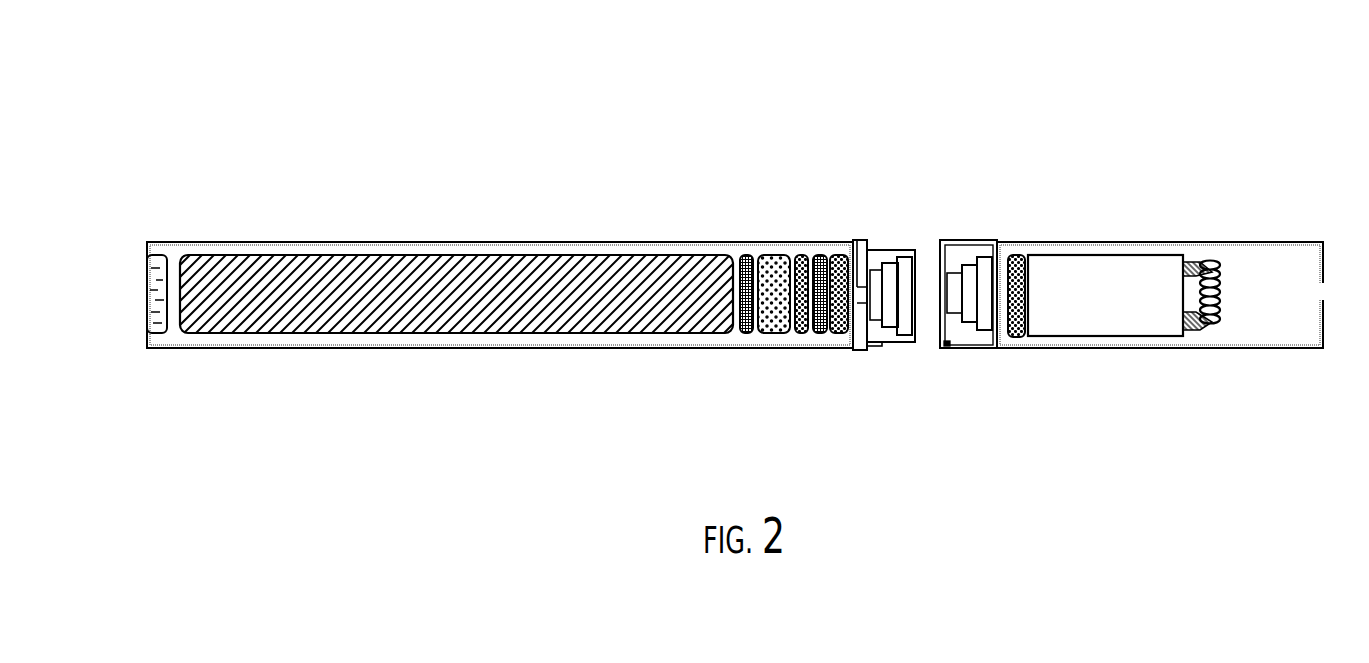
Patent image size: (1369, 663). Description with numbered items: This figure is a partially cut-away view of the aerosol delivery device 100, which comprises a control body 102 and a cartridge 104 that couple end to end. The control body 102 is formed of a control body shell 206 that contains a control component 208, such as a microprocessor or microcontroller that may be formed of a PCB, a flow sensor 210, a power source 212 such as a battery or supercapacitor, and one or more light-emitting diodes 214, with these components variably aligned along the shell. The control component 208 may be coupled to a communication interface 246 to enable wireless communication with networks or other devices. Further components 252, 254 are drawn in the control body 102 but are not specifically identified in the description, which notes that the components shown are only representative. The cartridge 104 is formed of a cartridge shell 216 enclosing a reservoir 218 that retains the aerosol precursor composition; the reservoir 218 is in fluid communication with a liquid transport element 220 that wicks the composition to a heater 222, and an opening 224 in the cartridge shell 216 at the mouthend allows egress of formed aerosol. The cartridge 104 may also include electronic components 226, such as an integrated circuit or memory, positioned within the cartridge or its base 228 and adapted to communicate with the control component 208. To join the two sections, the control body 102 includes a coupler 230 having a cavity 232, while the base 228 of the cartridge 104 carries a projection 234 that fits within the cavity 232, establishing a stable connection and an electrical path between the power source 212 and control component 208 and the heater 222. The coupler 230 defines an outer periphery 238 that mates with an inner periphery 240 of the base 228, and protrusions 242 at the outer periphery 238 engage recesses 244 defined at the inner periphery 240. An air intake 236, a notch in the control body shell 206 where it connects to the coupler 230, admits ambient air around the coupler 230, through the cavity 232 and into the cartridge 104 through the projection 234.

The aerosol delivery device 100 is at (630, 80).
The control body 102 is at (217, 199).
The cartridge 104 is at (1145, 204).
The control body shell 206 is at (500, 321).
The control component 208 is at (754, 341).
The flow sensor 210 is at (858, 355).
The power source 212 is at (463, 327).
The light-emitting diodes 214 is at (178, 328).
The cartridge shell 216 is at (1160, 336).
The reservoir 218 is at (1105, 320).
The liquid transport element 220 is at (1228, 329).
The heater 222 is at (1250, 325).
The opening 224 is at (1282, 246).
The electronic components 226 is at (1037, 320).
The base 228 is at (1022, 331).
The coupler 230 is at (907, 325).
The cavity 232 is at (873, 247).
The projection 234 is at (999, 263).
The air intake 236 is at (838, 268).
The outer periphery 238 is at (913, 262).
The inner periphery 240 is at (945, 240).
The protrusions 242 is at (899, 387).
The recesses 244 is at (980, 344).
The communication interface 246 is at (722, 328).
The seal 252 is at (777, 355).
The gasket 254 is at (802, 369).